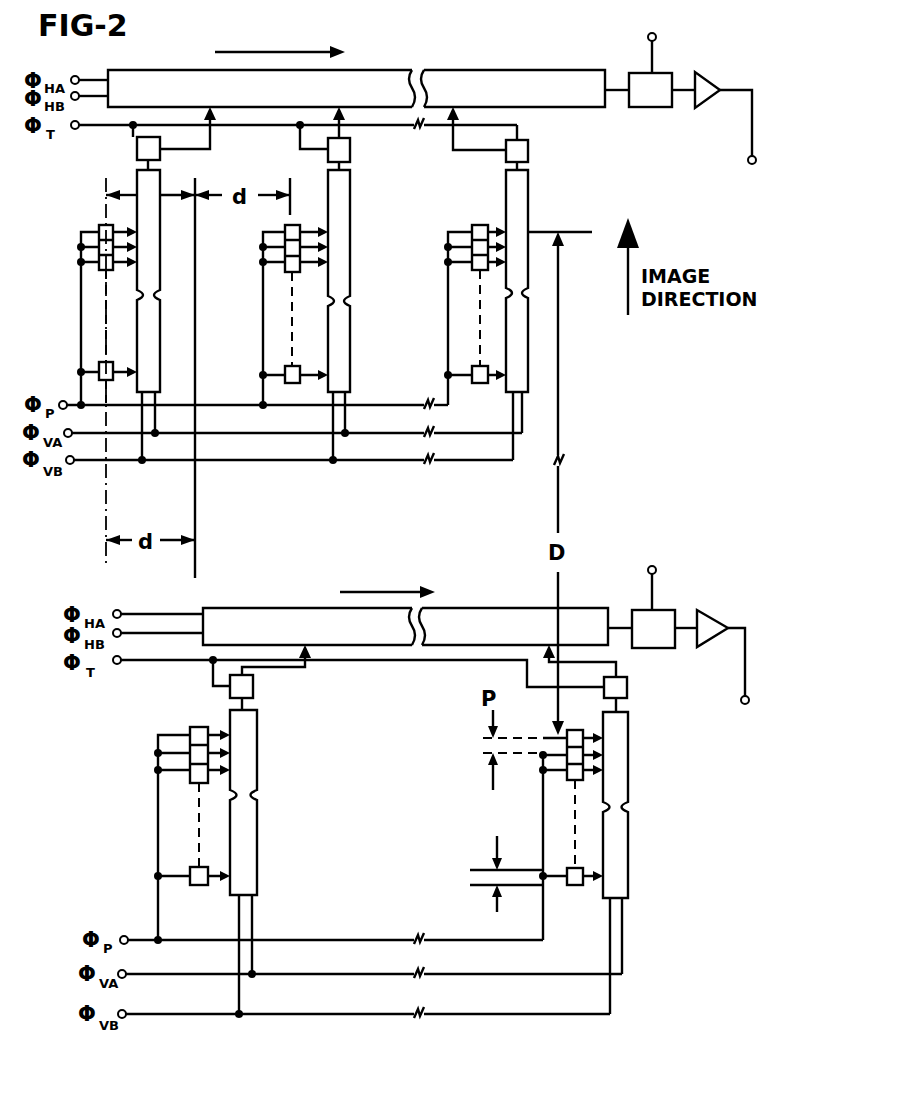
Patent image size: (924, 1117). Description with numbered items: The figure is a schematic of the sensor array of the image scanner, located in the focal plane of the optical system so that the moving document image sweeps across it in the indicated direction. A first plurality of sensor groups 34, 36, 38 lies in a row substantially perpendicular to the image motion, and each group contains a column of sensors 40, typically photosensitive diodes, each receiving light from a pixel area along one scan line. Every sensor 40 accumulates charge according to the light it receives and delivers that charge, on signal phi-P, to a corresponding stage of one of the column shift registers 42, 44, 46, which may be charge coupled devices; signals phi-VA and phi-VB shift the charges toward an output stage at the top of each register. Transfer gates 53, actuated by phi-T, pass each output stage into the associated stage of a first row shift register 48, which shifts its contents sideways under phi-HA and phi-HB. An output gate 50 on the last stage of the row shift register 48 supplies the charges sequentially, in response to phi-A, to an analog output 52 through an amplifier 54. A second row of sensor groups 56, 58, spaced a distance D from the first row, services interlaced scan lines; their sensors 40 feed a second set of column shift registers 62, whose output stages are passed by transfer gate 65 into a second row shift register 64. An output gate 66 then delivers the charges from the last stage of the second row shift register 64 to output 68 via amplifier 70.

The sensor group 34 is at (94, 219).
The sensor group 36 is at (280, 230).
The sensor group 38 is at (480, 217).
The sensor 40 is at (99, 262).
The column shift register 42 is at (165, 312).
The column shift register 44 is at (350, 314).
The column shift register 46 is at (530, 306).
The first row shift register 48 is at (433, 78).
The output gate 50 is at (640, 80).
The analog output 52 is at (752, 118).
The transfer gate 53 is at (137, 149).
The amplifier 54 is at (702, 82).
The sensor group 56 is at (192, 716).
The sensor group 58 is at (564, 724).
The column shift register 62 is at (258, 812).
The second row shift register 64 is at (286, 618).
The transfer gate 65 is at (244, 688).
The output gate 66 is at (660, 617).
The output 68 is at (745, 686).
The amplifier 70 is at (710, 618).